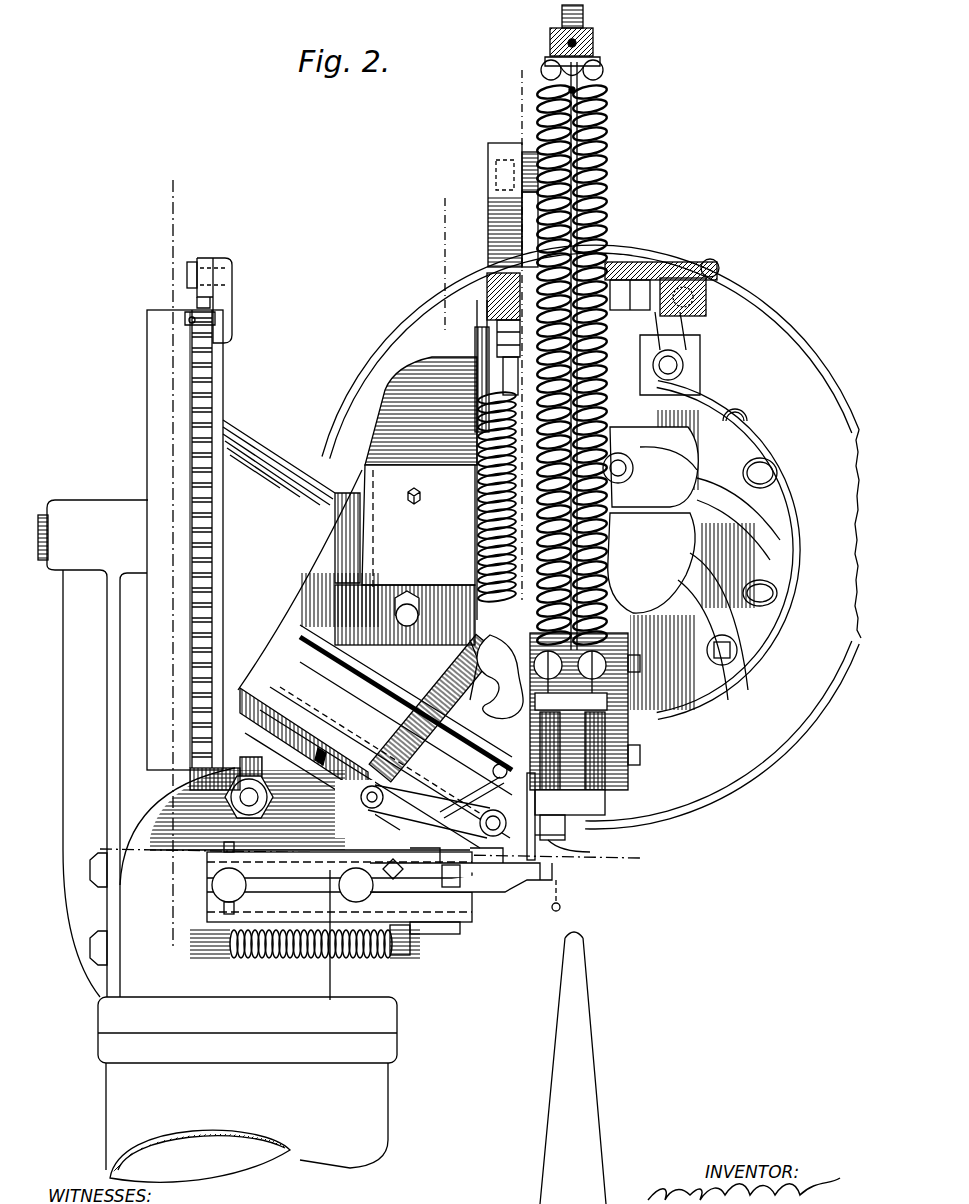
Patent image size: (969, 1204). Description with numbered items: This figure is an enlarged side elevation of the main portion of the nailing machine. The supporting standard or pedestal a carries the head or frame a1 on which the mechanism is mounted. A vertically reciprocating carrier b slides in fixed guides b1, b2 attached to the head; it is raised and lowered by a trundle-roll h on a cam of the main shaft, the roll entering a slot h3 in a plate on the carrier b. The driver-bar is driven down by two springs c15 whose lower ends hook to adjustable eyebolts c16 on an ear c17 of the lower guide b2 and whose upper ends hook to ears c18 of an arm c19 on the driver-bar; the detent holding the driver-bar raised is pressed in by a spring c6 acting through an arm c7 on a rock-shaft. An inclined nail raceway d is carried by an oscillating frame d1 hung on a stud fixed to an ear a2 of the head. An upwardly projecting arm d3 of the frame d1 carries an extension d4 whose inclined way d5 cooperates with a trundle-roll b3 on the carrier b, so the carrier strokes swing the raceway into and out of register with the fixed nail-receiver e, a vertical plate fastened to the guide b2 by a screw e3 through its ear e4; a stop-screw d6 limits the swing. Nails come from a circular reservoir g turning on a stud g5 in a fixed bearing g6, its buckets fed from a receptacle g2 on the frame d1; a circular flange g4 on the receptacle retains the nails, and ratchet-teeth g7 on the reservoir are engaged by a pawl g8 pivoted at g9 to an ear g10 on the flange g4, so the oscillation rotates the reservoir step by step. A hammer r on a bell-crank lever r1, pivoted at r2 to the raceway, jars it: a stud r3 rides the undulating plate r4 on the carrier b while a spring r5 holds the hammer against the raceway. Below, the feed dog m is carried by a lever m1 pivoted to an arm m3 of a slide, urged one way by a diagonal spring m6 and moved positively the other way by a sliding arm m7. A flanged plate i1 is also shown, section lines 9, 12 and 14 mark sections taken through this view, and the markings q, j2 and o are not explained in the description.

The circular flange g4 is at (790, 385).
The trundle-roll h is at (640, 462).
The slot h3 is at (680, 475).
The upper fixed guide b1 is at (690, 327).
The detent spring c6 is at (660, 262).
The arm c7 is at (718, 262).
The arm c19 is at (595, 45).
The ears c18 is at (541, 66).
The springs c15 is at (537, 122).
The carrier b is at (600, 195).
The lower fixed guide b2 is at (630, 772).
The adjustable eyebolts c16 is at (535, 660).
The ear c17 is at (571, 741).
The flanged plate i1 is at (570, 802).
The trundle-roll b3 is at (496, 175).
The extension d4 is at (500, 247).
The center line q is at (482, 325).
The inclined groove or way d5 is at (492, 295).
The arm or ear a2 is at (395, 483).
The mouth or receptacle g2 is at (262, 445).
The oscillating frame d1 is at (335, 605).
The inclined chute or raceway d is at (380, 710).
The upwardly-projecting arm d3 is at (462, 660).
The spring r5 is at (395, 740).
The undulating plate r4 is at (502, 677).
The hammer r is at (360, 792).
The bell-crank lever r1 is at (440, 812).
The pivot r2 is at (482, 790).
The stud r3 is at (506, 770).
The fixed nail-receiver e is at (537, 840).
The ear e4 is at (566, 828).
The screw or bolt e3 is at (570, 845).
The section line 12 is at (370, 851).
The section line 14 is at (171, 559).
The base j2 is at (310, 810).
The stop-screw d6 is at (240, 797).
The arm m3 is at (225, 880).
The spring m6 is at (300, 950).
The dog m is at (530, 890).
The lever m1 is at (455, 895).
The sliding arm m7 is at (425, 930).
The head or frame a1 is at (400, 960).
The hook o is at (554, 902).
The fixed bearing g6 is at (85, 510).
The stud g5 is at (43, 515).
The reservoir g is at (165, 712).
The ear g10 is at (222, 262).
The pivot g9 is at (233, 277).
The pawl g8 is at (197, 302).
The ratchet-teeth g7 is at (185, 318).
The supporting standard or pedestal a is at (370, 1090).
The section line 9 is at (331, 943).